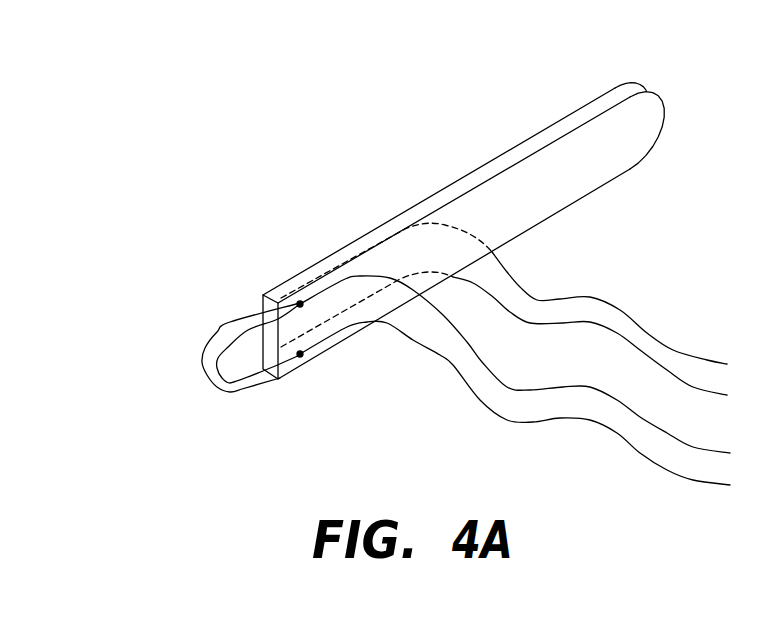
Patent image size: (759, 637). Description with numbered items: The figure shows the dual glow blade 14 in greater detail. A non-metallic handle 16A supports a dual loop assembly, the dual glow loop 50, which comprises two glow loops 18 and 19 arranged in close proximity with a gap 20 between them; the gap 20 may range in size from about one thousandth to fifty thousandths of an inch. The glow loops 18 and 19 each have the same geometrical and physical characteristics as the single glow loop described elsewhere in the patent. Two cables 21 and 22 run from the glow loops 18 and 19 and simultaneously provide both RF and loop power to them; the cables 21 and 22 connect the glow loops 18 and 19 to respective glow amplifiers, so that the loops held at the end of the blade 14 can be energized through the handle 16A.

The dual glow blade 14 is at (463, 167).
The non-metallic handle 16A is at (572, 122).
The dual glow loop 50 is at (200, 343).
The glow loop 19 is at (208, 342).
The glow loop 18 is at (228, 392).
The gap 20 is at (151, 393).
The cable 21 is at (618, 436).
The cable 22 is at (665, 322).